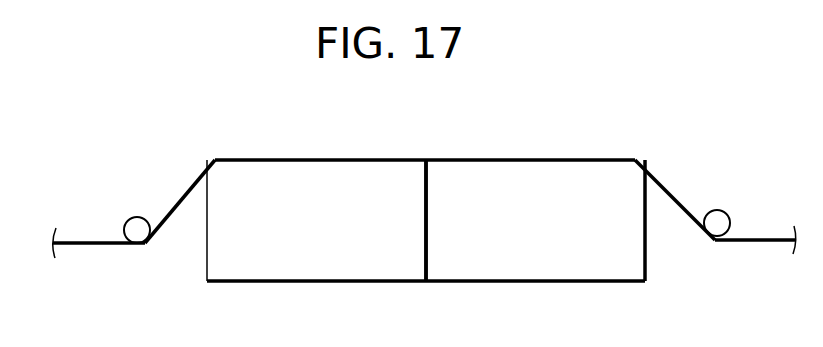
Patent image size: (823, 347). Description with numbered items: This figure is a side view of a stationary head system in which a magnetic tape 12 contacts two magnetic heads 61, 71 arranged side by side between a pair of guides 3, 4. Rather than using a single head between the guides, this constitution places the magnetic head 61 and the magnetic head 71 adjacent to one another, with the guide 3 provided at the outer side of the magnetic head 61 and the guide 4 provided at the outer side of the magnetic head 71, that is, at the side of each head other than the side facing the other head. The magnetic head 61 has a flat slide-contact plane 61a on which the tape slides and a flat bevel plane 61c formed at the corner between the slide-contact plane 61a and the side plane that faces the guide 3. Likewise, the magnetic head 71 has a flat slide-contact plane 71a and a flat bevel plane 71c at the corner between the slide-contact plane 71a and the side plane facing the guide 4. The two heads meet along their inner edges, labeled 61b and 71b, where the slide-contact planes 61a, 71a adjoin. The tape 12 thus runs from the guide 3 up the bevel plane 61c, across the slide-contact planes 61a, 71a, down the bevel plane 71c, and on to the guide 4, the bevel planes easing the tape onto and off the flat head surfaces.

The guide 3 is at (135, 227).
The guide 4 is at (716, 226).
The web 12 is at (775, 238).
The magnetic head 61 is at (266, 268).
The slide-contact plane 61a is at (288, 157).
The edge of guide member 61b is at (425, 160).
The bevel plane 61c is at (213, 161).
The magnetic head 71 is at (543, 268).
The slide-contact plane 71a is at (548, 158).
The edge of guide member 71b is at (428, 160).
The bevel plane 71c is at (636, 160).